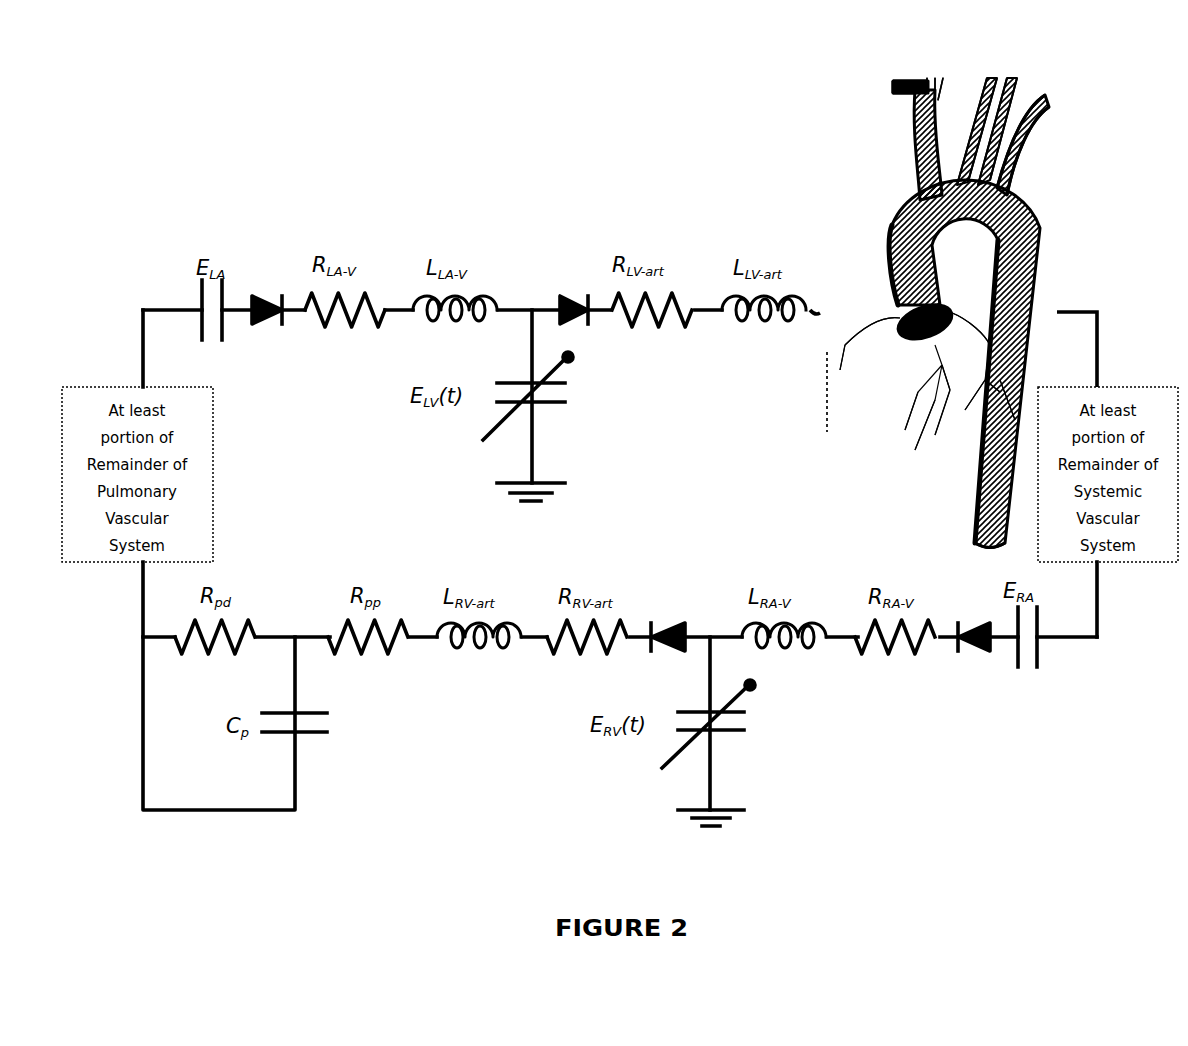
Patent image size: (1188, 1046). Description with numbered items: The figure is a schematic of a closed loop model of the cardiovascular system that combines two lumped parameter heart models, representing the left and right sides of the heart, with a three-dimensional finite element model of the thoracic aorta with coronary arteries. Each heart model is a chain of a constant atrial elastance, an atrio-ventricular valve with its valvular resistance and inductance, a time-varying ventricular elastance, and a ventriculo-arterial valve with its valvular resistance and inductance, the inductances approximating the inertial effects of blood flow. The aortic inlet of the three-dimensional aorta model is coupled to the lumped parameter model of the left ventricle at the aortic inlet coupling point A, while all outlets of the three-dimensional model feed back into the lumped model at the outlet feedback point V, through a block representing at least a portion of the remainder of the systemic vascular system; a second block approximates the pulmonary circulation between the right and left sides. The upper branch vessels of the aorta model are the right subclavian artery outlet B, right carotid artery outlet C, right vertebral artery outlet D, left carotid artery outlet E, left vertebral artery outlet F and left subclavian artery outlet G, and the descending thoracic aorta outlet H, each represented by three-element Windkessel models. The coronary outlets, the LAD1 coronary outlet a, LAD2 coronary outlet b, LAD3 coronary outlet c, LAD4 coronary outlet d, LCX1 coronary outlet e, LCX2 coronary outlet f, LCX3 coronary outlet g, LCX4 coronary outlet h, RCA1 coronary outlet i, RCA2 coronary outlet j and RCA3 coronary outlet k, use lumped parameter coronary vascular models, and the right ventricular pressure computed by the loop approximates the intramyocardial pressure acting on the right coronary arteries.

The aortic inlet coupling point A is at (818, 301).
The outlet feedback point V is at (1077, 336).
The right subclavian artery outlet B is at (895, 89).
The right carotid artery outlet C is at (926, 75).
The right vertebral artery outlet D is at (946, 77).
The left carotid artery outlet E is at (977, 120).
The left vertebral artery outlet F is at (997, 120).
The left subclavian artery outlet G is at (1028, 137).
The descending thoracic aorta outlet H is at (990, 559).
The LAD1 coronary outlet a is at (970, 319).
The LAD2 coronary outlet b is at (996, 394).
The LAD3 coronary outlet c is at (952, 377).
The LAD4 coronary outlet d is at (939, 421).
The LCX1 coronary outlet e is at (1011, 410).
The LCX2 coronary outlet f is at (970, 406).
The LCX3 coronary outlet g is at (922, 433).
The LCX4 coronary outlet h is at (903, 423).
The RCA1 coronary outlet i is at (859, 338).
The RCA2 coronary outlet j is at (823, 398).
The RCA3 coronary outlet k is at (846, 366).